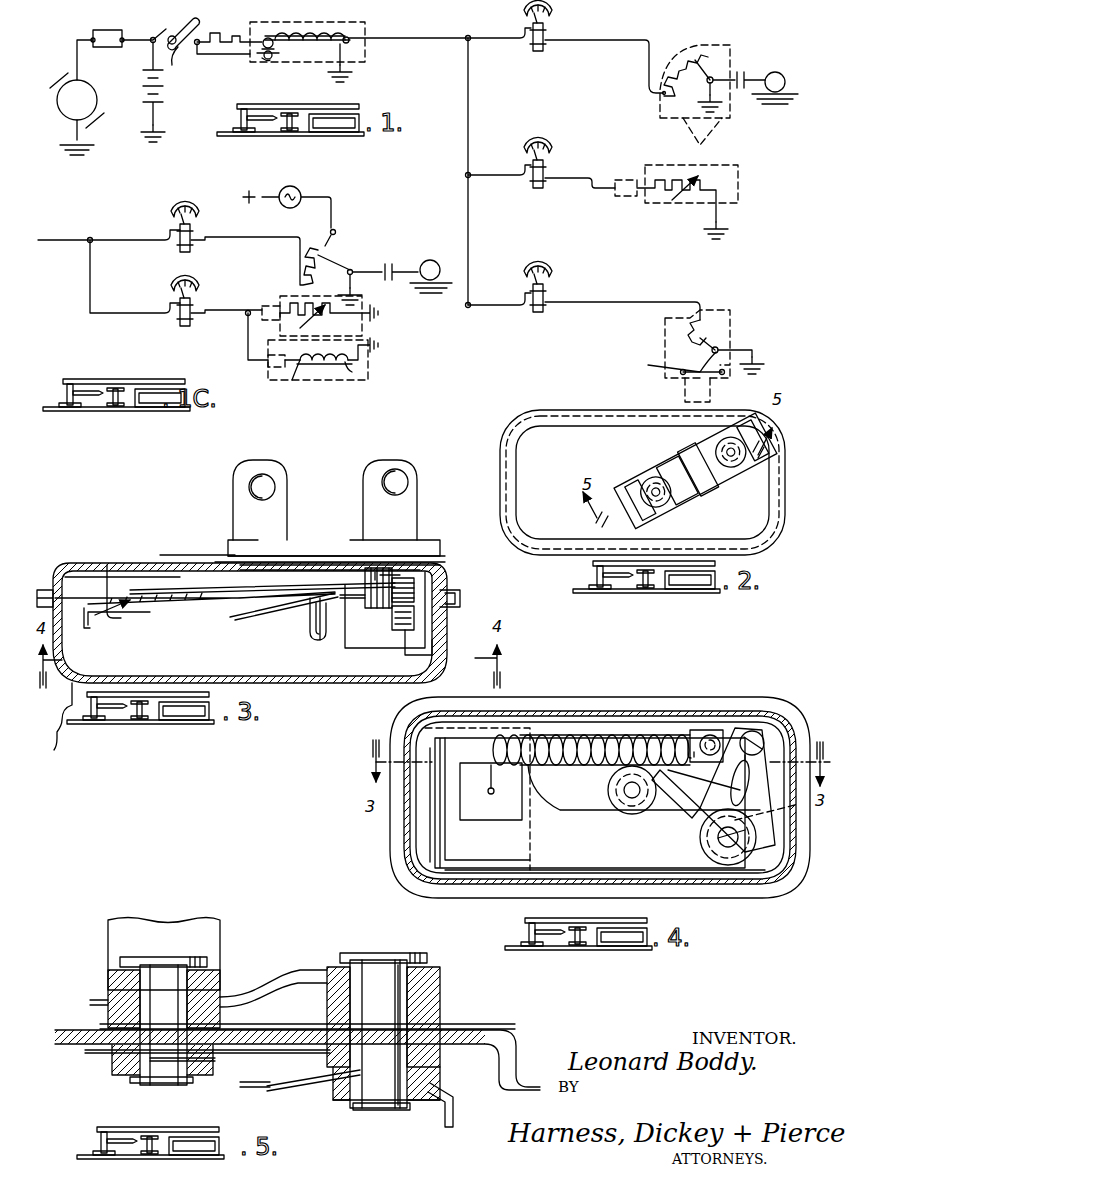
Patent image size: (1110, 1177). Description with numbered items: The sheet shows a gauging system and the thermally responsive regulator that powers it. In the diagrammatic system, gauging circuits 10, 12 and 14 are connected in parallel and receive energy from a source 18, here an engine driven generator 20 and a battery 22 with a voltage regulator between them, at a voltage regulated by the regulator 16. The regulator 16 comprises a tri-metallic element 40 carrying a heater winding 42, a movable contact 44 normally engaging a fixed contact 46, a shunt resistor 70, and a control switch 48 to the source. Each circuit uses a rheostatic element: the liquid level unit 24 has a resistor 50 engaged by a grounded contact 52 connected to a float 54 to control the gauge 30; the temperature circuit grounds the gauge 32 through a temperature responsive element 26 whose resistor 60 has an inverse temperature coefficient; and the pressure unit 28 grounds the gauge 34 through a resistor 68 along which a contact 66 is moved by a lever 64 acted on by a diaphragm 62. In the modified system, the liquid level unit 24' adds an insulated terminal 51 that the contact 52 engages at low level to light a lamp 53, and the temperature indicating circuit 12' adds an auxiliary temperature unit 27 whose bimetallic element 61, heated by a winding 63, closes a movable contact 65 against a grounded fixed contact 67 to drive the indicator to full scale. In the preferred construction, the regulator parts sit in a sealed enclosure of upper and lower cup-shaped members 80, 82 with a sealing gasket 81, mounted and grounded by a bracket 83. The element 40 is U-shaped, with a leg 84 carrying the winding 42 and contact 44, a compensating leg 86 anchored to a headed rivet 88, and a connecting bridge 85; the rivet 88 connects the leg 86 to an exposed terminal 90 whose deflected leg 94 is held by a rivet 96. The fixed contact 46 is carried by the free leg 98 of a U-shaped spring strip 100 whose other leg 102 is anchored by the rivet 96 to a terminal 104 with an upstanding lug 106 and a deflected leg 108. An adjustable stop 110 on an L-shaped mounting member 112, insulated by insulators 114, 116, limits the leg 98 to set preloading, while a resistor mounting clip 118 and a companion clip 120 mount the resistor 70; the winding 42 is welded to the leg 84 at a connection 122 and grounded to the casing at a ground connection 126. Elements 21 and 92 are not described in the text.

In FIG. 1, the gauging circuit 10 is at (609, 54).
In FIG. 1, the temperature measuring circuit 12 is at (552, 182).
In FIG. 1C, the temperature indicating circuit 12' is at (253, 340).
In FIG. 1, the fluid pressure responsive gauging circuit 14 is at (612, 324).
In FIG. 1, the regulator 16 is at (305, 86).
In FIG. 3, the regulator 16 is at (165, 555).
In FIG. 2, the regulator 16 is at (801, 550).
In FIG. 4, the regulator 16 is at (481, 925).
In FIG. 5, the regulator 16 is at (493, 1110).
In FIG. 1, the source 18 is at (119, 126).
In FIG. 1, the generator 20 is at (96, 93).
In FIG. 1, the voltage regulator and switch 21 is at (156, 36).
In FIG. 1, the battery 22 is at (163, 95).
In FIG. 1, the liquid level unit 24 is at (695, 81).
In FIG. 1C, the liquid level unit 24' is at (418, 266).
In FIG. 1, the temperature indicating element 26 is at (775, 185).
In FIG. 1C, the temperature indicating element 26 is at (299, 303).
In FIG. 1C, the auxiliary temperature unit 27 is at (329, 396).
In FIG. 1, the pressure unit 28 is at (752, 307).
In FIG. 1, the gauge 30 is at (552, 36).
In FIG. 1C, the gauge 30 is at (198, 237).
In FIG. 1, the gauge 32 is at (552, 172).
In FIG. 1C, the gauge 32 is at (198, 310).
In FIG. 1, the gauge 34 is at (552, 297).
In FIG. 1, the thermally responsive tri-metallic element 40 is at (275, 36).
In FIG. 3, the thermally responsive tri-metallic element 40 is at (95, 622).
In FIG. 4, the thermally responsive tri-metallic element 40 is at (445, 818).
In FIG. 5, the thermally responsive tri-metallic element 40 is at (280, 1085).
In FIG. 1, the heater winding 42 is at (325, 32).
In FIG. 3, the heater winding 42 is at (125, 600).
In FIG. 4, the heater winding 42 is at (575, 735).
In FIG. 1, the movable contact 44 is at (264, 40).
In FIG. 3, the movable contact 44 is at (375, 610).
In FIG. 4, the movable contact 44 is at (717, 730).
In FIG. 1, the fixed contact 46 is at (262, 62).
In FIG. 3, the fixed contact 46 is at (385, 572).
In FIG. 4, the fixed contact 46 is at (745, 732).
In FIG. 1, the control switch 48 is at (187, 46).
In FIG. 1, the resistor 50 is at (668, 70).
In FIG. 1C, the resistor 50 is at (300, 258).
In FIG. 1C, the insulated terminal 51 is at (345, 232).
In FIG. 1, the grounded contact 52 is at (715, 75).
In FIG. 1C, the grounded contact 52 is at (335, 262).
In FIG. 1C, the lamp 53 is at (300, 190).
In FIG. 1, the float 54 is at (781, 73).
In FIG. 1, the resistor 60 is at (702, 175).
In FIG. 1C, the resistor 60 is at (328, 320).
In FIG. 1C, the bimetallic element 61 is at (290, 378).
In FIG. 1, the diaphragm 62 is at (710, 375).
In FIG. 1C, the heater winding 63 is at (355, 372).
In FIG. 1, the lever 64 is at (673, 362).
In FIG. 1C, the movable contact 65 is at (352, 360).
In FIG. 1, the contact 66 is at (722, 346).
In FIG. 1C, the grounded fixed contact 67 is at (366, 345).
In FIG. 1, the resistor 68 is at (680, 318).
In FIG. 1, the shunt resistor 70 is at (218, 33).
In FIG. 3, the shunt resistor 70 is at (315, 640).
In FIG. 4, the shunt resistor 70 is at (668, 805).
In FIG. 3, the upper cup-shaped member 80 is at (445, 582).
In FIG. 3, the sealing gasket 81 is at (110, 565).
In FIG. 3, the lower cup-shaped member 82 is at (455, 615).
In FIG. 3, the bracket 83 is at (65, 724).
In FIG. 3, the leg 84 is at (140, 615).
In FIG. 4, the leg 84 is at (495, 735).
In FIG. 4, the connecting bridge 85 is at (438, 808).
In FIG. 3, the compensating leg 86 is at (318, 590).
In FIG. 4, the compensating leg 86 is at (465, 870).
In FIG. 5, the compensating leg 86 is at (300, 1090).
In FIG. 2, the headed rivet 88 is at (740, 470).
In FIG. 4, the headed rivet 88 is at (718, 842).
In FIG. 5, the headed rivet 88 is at (405, 985).
In FIG. 1, the terminal 90 is at (410, 160).
In FIG. 1C, the terminal 90 is at (109, 266).
In FIG. 3, the terminal 90 is at (418, 492).
In FIG. 2, the terminal 90 is at (685, 450).
In FIG. 5, the terminal 90 is at (330, 965).
In FIG. 3, the terminal bracket 92 is at (398, 462).
In FIG. 2, the terminal bracket 92 is at (730, 495).
In FIG. 2, the leg 94 is at (692, 492).
In FIG. 5, the leg 94 is at (90, 1007).
In FIG. 2, the rivet 96 is at (658, 500).
In FIG. 4, the rivet 96 is at (625, 800).
In FIG. 5, the rivet 96 is at (155, 975).
In FIG. 3, the free leg 98 is at (400, 585).
In FIG. 4, the free leg 98 is at (708, 735).
In FIG. 3, the U-shaped spring strip 100 is at (290, 600).
In FIG. 4, the U-shaped spring strip 100 is at (545, 796).
In FIG. 5, the U-shaped spring strip 100 is at (110, 1060).
In FIG. 3, the leg 102 is at (260, 590).
In FIG. 4, the leg 102 is at (570, 805).
In FIG. 5, the leg 102 is at (215, 1065).
In FIG. 1, the terminal 104 is at (230, 56).
In FIG. 3, the terminal 104 is at (312, 530).
In FIG. 5, the terminal 104 is at (215, 978).
In FIG. 3, the upstanding lug 106 is at (272, 460).
In FIG. 2, the upstanding lug 106 is at (640, 462).
In FIG. 5, the upstanding lug 106 is at (215, 932).
In FIG. 3, the leg 108 is at (420, 572).
In FIG. 5, the leg 108 is at (440, 1023).
In FIG. 3, the adjustable stop 110 is at (400, 632).
In FIG. 4, the adjustable stop 110 is at (762, 738).
In FIG. 3, the L-shaped mounting member 112 is at (400, 602).
In FIG. 4, the L-shaped mounting member 112 is at (718, 795).
In FIG. 5, the L-shaped mounting member 112 is at (445, 1052).
In FIG. 5, the insulator 114 is at (412, 1000).
In FIG. 5, the insulator 116 is at (445, 1070).
In FIG. 3, the resistor mounting clip 118 is at (425, 658).
In FIG. 5, the resistor mounting clip 118 is at (445, 1118).
In FIG. 3, the clip 120 is at (312, 638).
In FIG. 4, the clip 120 is at (680, 768).
In FIG. 5, the clip 120 is at (225, 1050).
In FIG. 4, the connection 122 is at (690, 740).
In FIG. 3, the ground connection 126 is at (110, 565).
In FIG. 4, the ground connection 126 is at (490, 796).